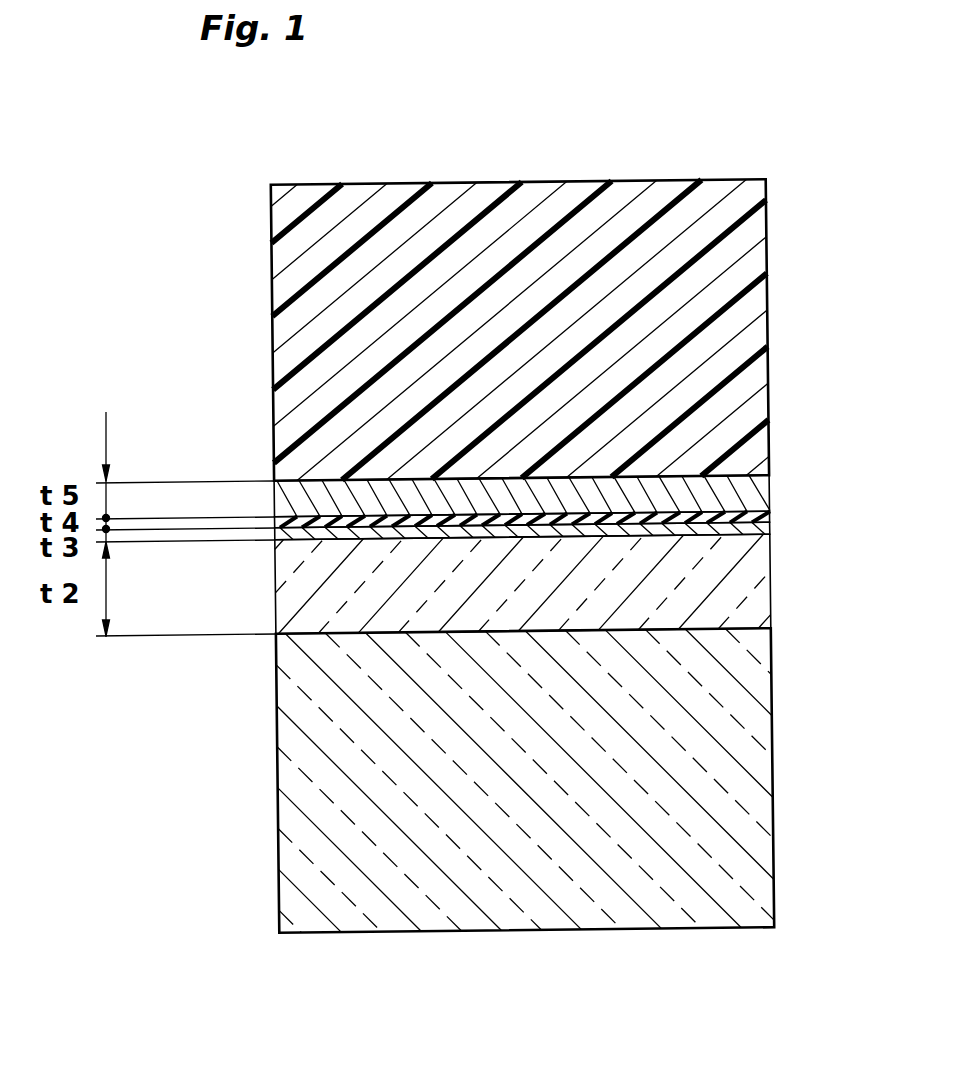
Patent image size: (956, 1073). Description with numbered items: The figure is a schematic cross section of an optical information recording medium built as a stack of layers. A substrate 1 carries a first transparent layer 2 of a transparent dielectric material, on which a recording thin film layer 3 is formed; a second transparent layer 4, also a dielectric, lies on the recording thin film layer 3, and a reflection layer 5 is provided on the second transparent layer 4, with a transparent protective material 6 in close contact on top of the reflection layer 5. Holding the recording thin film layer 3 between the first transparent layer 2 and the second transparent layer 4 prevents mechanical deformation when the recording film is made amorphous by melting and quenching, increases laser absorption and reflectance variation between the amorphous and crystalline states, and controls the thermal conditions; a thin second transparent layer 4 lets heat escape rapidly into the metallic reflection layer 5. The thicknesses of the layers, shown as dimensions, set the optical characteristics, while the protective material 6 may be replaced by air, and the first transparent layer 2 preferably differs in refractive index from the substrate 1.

The substrate 1 is at (737, 782).
The first transparent layer 2 is at (740, 582).
The recording thin film layer 3 is at (755, 528).
The second transparent layer 4 is at (758, 517).
The reflection layer 5 is at (747, 493).
The transparent protective material 6 is at (738, 337).